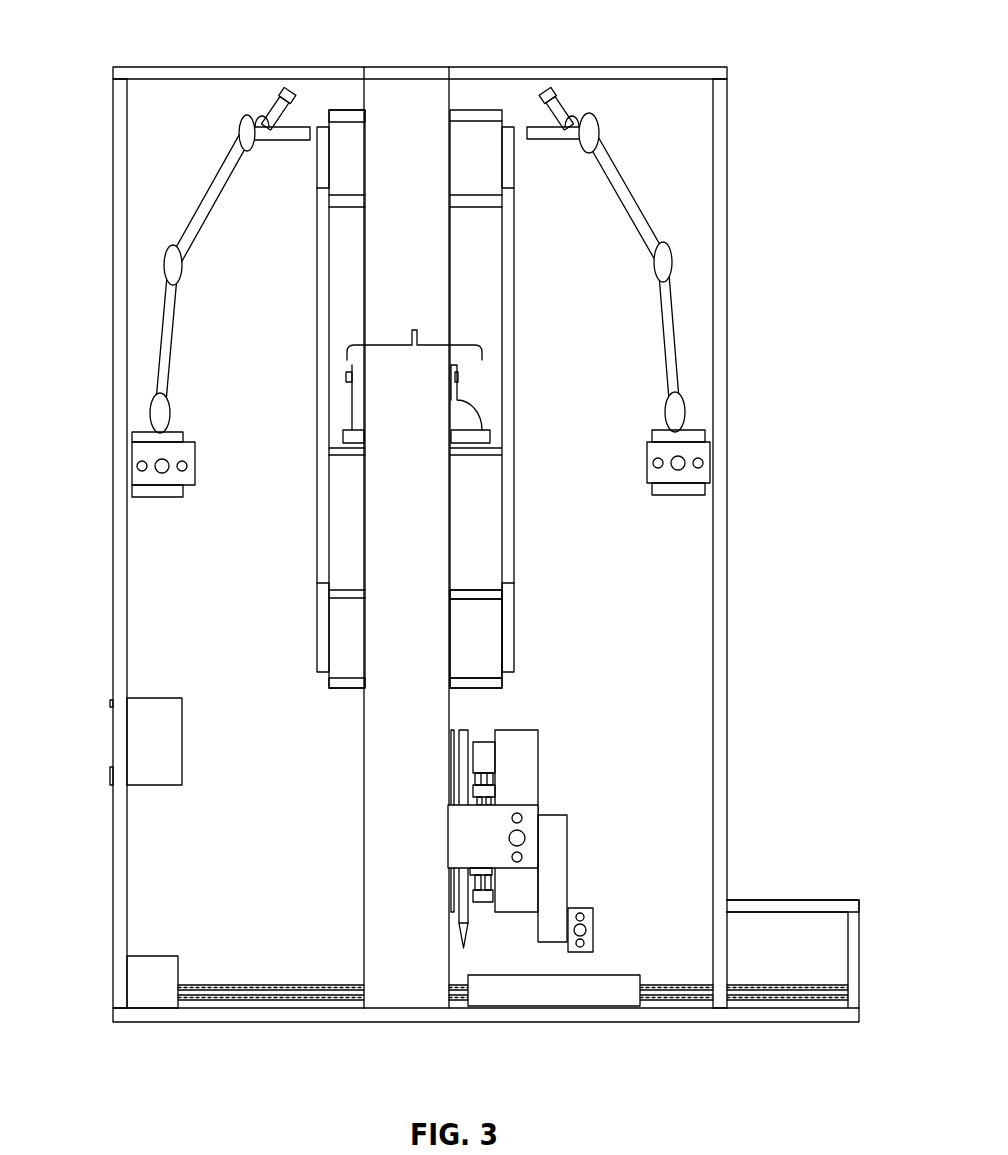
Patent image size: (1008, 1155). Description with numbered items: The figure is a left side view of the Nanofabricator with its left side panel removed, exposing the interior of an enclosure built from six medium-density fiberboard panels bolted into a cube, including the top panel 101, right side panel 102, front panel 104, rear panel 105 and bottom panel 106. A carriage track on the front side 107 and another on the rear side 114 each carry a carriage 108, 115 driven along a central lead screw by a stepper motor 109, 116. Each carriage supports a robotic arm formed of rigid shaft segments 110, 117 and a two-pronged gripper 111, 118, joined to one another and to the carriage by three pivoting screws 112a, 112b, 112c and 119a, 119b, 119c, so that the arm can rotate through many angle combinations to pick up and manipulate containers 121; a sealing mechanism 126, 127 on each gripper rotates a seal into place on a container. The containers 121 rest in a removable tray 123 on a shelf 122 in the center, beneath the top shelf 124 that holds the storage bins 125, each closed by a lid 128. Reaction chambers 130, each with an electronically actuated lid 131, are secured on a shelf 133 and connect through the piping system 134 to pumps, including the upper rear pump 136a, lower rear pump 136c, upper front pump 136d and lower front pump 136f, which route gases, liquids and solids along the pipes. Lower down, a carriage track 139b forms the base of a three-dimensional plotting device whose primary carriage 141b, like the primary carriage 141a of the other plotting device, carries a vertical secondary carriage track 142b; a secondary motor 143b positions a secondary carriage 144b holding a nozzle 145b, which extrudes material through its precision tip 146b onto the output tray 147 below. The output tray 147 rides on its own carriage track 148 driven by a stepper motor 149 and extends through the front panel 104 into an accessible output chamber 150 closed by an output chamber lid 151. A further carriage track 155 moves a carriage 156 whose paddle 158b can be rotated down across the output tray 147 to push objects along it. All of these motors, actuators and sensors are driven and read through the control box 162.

The top panel 101 is at (150, 75).
The right side panel 102 is at (620, 557).
The front panel 104 is at (720, 215).
The rear panel 105 is at (123, 178).
The bottom panel 106 is at (703, 1013).
The front carriage track 107 is at (697, 465).
The carriage 108 is at (700, 447).
The stepper motor 109 is at (680, 488).
The rigid shaft segment 110 is at (613, 177).
The two-pronged gripper 111 is at (528, 127).
The pivoting screw 112a is at (590, 120).
The pivoting screw 112b is at (663, 260).
The pivoting screw 112c is at (675, 415).
The rear carriage track 114 is at (155, 468).
The carriage 115 is at (147, 457).
The stepper motor 116 is at (142, 437).
The rigid shaft segment 117 is at (213, 187).
The two-pronged gripper 118 is at (303, 130).
The pivoting screw 119a is at (243, 120).
The pivoting screw 119b is at (172, 267).
The pivoting screw 119c is at (160, 408).
The container 121 is at (412, 330).
The shelf 122 is at (350, 450).
The removable tray 123 is at (487, 437).
The top shelf 124 is at (355, 200).
The storage bin 125 is at (492, 174).
The sealing mechanism 126 is at (558, 107).
The sealing mechanism 127 is at (275, 103).
The lid 128 is at (348, 112).
The reaction chamber 130 is at (492, 654).
The lid 131 is at (482, 596).
The shelf 133 is at (350, 683).
The piping system 134 is at (510, 307).
The upper rear pump 136a is at (323, 137).
The lower rear pump 136c is at (323, 620).
The upper front pump 136d is at (510, 137).
The lower front pump 136f is at (508, 632).
The carriage track 139b is at (517, 838).
The primary carriage 141a is at (449, 900).
The primary carriage 141b is at (516, 738).
The secondary carriage track 142b is at (483, 893).
The secondary motor 143b is at (483, 757).
The secondary carriage 144b is at (488, 872).
The nozzle 145b is at (462, 905).
The precision tip 146b is at (462, 944).
The output tray 147 is at (627, 1004).
The output tray carriage track 148 is at (225, 992).
The stepper motor 149 is at (172, 999).
The output chamber 150 is at (800, 962).
The output chamber lid 151 is at (807, 907).
The carriage track 155 is at (582, 930).
The carriage 156 is at (593, 907).
The paddle 158b is at (555, 847).
The control box 162 is at (172, 762).